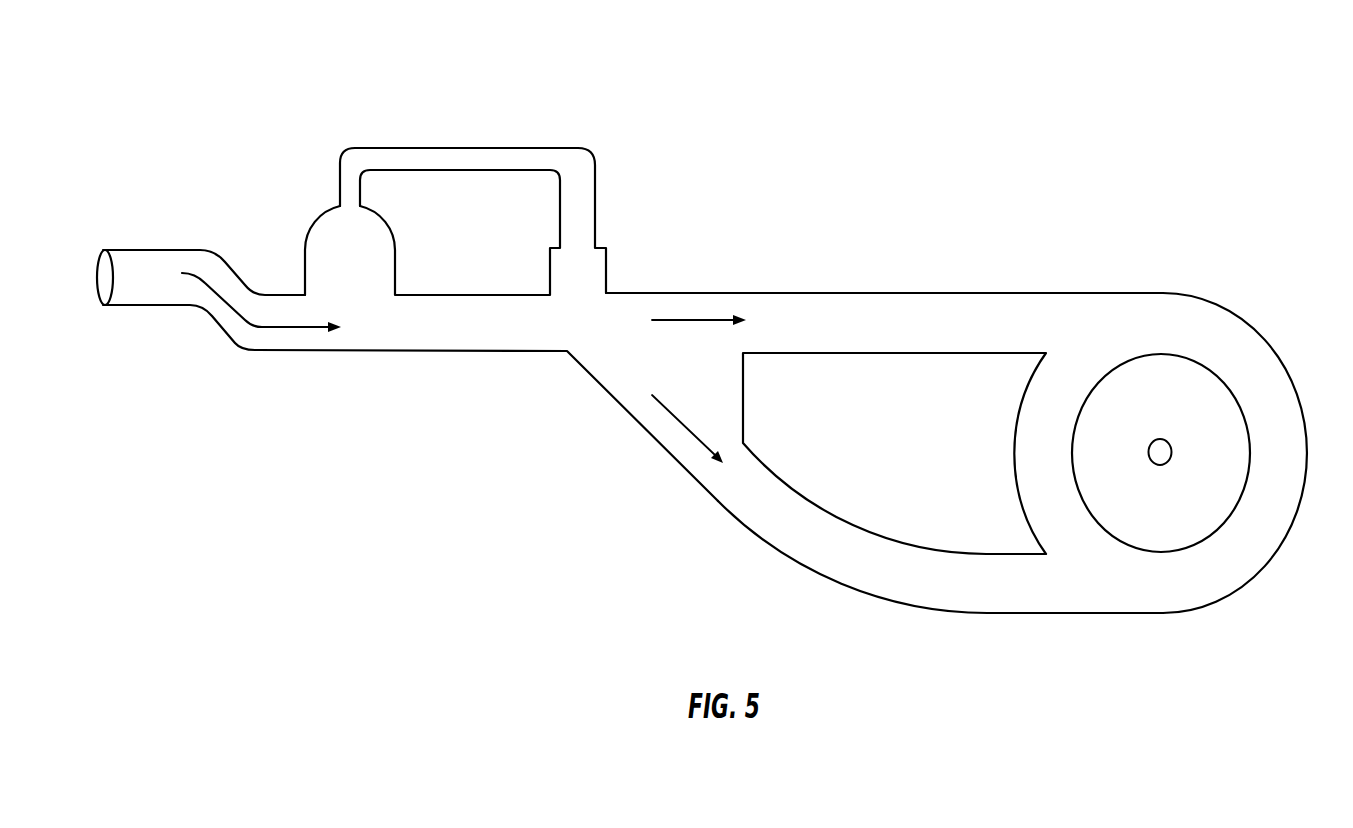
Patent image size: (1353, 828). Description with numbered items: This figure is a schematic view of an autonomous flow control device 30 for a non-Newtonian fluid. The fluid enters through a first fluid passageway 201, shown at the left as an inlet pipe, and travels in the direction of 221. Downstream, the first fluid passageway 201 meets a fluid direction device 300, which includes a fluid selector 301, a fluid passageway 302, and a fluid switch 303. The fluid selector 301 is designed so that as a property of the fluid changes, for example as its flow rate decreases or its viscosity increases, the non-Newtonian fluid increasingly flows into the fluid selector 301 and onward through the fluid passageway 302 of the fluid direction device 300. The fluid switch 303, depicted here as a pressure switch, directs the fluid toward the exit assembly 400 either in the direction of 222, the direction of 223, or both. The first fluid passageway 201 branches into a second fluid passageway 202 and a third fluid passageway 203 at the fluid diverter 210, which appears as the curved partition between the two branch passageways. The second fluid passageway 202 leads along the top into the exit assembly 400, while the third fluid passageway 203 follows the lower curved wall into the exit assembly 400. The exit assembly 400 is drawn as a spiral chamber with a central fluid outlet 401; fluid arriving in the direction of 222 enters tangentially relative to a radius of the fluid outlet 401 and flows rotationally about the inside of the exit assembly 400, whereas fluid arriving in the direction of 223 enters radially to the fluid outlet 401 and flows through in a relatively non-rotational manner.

The autonomous flow control device 30 is at (215, 72).
The fluid direction device 300 is at (645, 98).
The fluid selector 301 is at (322, 230).
The fluid passageway 302 is at (468, 164).
The first fluid passageway 201 is at (137, 262).
The direction of fluid flow in first fluid passageway 221 is at (248, 350).
The second fluid passageway 202 is at (885, 307).
The direction of fluid flow tangential to fluid outlet 222 is at (692, 322).
The fluid switch 303 is at (582, 327).
The direction of fluid flow radial to fluid outlet 223 is at (688, 432).
The third fluid passageway 203 is at (910, 585).
The fluid diverter 210 is at (817, 419).
The exit assembly 400 is at (1246, 270).
The fluid outlet 401 is at (1160, 465).